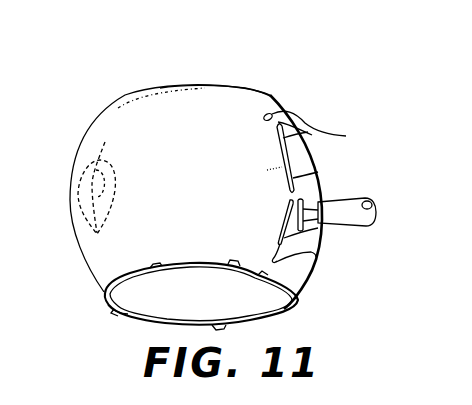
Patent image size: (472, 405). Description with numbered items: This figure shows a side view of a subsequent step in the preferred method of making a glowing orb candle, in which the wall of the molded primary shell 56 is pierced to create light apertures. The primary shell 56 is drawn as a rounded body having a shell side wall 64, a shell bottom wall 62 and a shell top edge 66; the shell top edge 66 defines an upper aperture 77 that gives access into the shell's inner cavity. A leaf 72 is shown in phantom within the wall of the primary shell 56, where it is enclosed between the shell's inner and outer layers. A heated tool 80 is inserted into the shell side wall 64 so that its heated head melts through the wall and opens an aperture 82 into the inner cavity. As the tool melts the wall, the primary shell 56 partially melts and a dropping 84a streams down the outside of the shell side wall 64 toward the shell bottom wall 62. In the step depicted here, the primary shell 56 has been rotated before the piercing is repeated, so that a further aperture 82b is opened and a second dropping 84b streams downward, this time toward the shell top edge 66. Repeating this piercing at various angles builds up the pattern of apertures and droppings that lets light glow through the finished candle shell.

The primary shell 56 is at (110, 108).
The shell bottom wall 62 is at (196, 84).
The shell side wall 64 is at (244, 102).
The leaf 72 is at (87, 182).
The dropping 84a is at (340, 136).
The aperture 82 is at (320, 172).
The heated tool 80 is at (377, 213).
The aperture 82b is at (321, 246).
The second dropping 84b is at (315, 266).
The shell top edge 66 is at (123, 276).
The upper aperture 77 is at (153, 280).